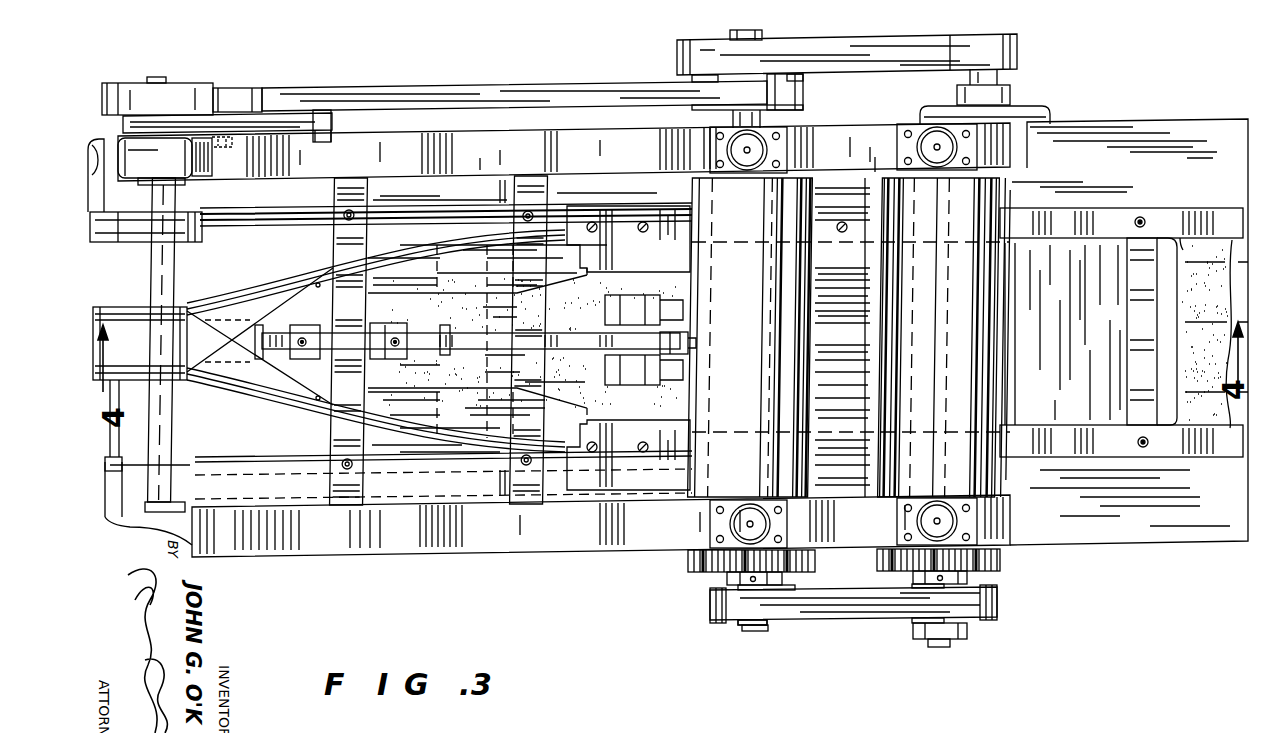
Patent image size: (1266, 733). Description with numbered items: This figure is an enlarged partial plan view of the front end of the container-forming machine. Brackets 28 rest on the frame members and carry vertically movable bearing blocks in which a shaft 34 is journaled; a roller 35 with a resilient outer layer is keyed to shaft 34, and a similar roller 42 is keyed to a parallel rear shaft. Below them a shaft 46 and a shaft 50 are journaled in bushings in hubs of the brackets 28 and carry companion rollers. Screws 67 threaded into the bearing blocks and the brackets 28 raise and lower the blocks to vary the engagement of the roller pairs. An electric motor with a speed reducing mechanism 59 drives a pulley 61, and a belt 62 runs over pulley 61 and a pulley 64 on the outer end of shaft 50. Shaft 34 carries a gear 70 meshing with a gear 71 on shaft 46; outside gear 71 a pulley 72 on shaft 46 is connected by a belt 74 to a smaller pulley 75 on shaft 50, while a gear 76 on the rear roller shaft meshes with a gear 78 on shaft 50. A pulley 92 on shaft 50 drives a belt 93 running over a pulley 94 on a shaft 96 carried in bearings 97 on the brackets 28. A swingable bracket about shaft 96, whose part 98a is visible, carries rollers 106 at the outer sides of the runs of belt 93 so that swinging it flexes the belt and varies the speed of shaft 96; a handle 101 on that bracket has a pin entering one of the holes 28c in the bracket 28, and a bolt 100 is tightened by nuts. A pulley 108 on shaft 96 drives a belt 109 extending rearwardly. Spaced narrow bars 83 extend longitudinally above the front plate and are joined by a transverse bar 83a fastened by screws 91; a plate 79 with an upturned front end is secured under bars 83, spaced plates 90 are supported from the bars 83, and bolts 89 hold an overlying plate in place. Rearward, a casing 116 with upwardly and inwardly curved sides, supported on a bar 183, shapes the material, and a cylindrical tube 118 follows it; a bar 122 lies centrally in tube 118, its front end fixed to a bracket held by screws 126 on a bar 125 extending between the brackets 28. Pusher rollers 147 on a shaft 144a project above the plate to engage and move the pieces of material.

The bracket 28 is at (490, 555).
The hole 28c is at (330, 140).
The shaft 34 is at (696, 345).
The roller 35 is at (942, 215).
The roller 42 is at (744, 215).
The shaft 46 is at (940, 647).
The shaft 50 is at (737, 30).
The speed reducing mechanism 59 is at (1025, 114).
The pulley 61 is at (1030, 24).
The belt 62 is at (865, 25).
The pulley 64 is at (698, 40).
The screw 67 is at (937, 147).
The gear 70 is at (1003, 562).
The gear 71 is at (1000, 560).
The pulley 72 is at (987, 622).
The belt 74 is at (860, 607).
The pulley 75 is at (712, 624).
The gear 76 is at (720, 580).
The gear 78 is at (688, 562).
The plate 79 is at (1160, 400).
The bar 83 is at (1180, 218).
The transversely extending bar 83a is at (1135, 275).
The bolt 89 is at (641, 222).
The plate 90 is at (555, 193).
The screw 91 is at (1141, 216).
The pulley 92 is at (700, 106).
The belt 93 is at (600, 90).
The pulley 94 is at (137, 82).
The shaft 96 is at (158, 78).
The bearing 97 is at (140, 183).
The lug 98a is at (325, 112).
The bolt 100 is at (177, 158).
The handle 101 is at (232, 147).
The roller 106 is at (252, 88).
The pulley 108 is at (148, 253).
The belt 109 is at (110, 243).
The casing 116 is at (295, 295).
The tube 118 is at (145, 378).
The bar 122 is at (460, 305).
The bar 125 is at (350, 420).
The screw 126 is at (343, 212).
The shaft 144a is at (610, 348).
The pusher roller 147 is at (660, 308).
The bar 183 is at (510, 195).